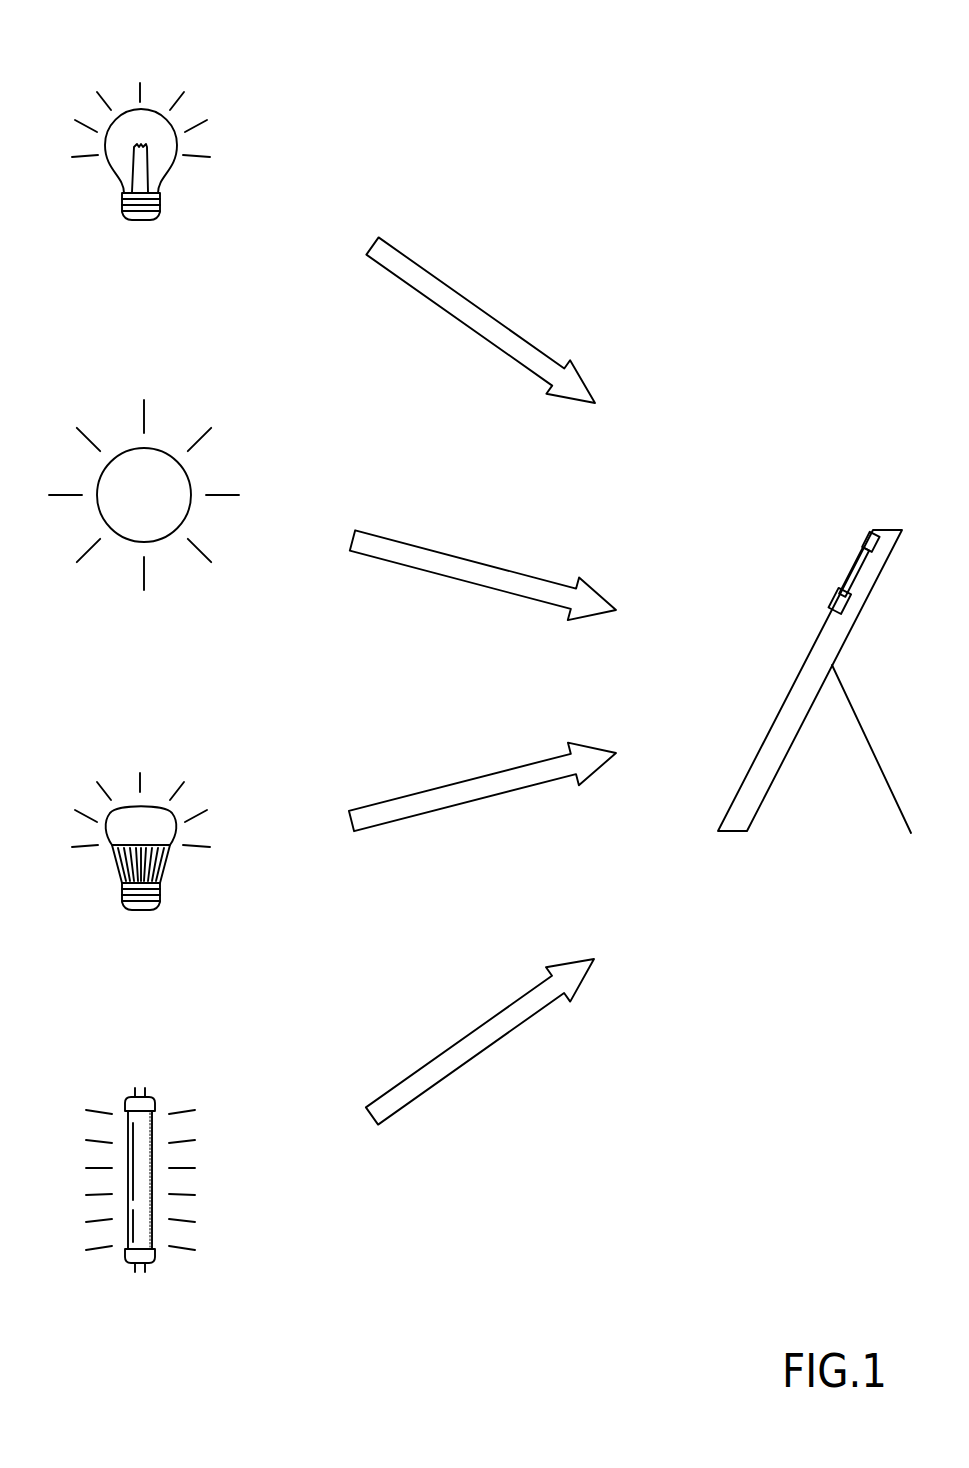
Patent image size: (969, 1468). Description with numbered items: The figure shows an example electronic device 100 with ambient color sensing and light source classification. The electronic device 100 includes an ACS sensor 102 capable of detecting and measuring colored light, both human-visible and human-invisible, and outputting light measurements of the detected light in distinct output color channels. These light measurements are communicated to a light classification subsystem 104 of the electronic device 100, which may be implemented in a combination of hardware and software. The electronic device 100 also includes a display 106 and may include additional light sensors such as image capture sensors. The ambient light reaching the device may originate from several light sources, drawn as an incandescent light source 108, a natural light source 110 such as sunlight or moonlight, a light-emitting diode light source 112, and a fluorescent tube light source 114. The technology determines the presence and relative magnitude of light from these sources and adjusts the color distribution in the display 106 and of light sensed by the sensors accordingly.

The electronic device 100 is at (730, 834).
The ACS sensor 102 is at (867, 536).
The light classification subsystem 104 is at (845, 598).
The display 106 is at (790, 687).
The incandescent light source 108 is at (136, 48).
The natural light source 110 is at (148, 356).
The light-emitting diode (LED) light source 112 is at (136, 734).
The fluorescent tube light source 114 is at (136, 1049).